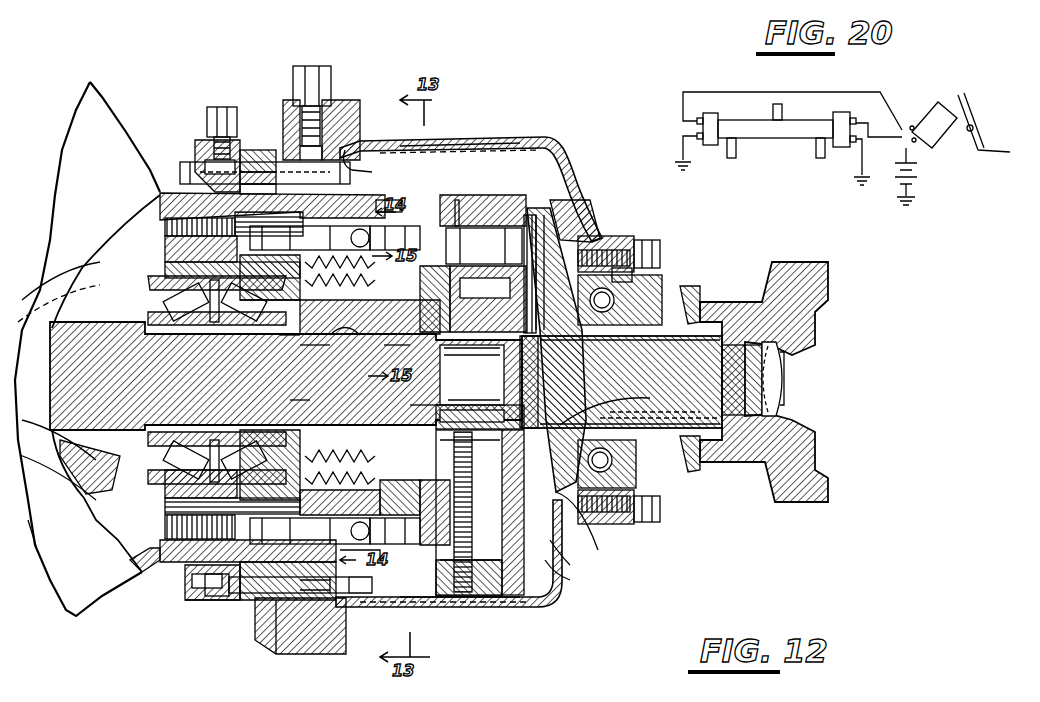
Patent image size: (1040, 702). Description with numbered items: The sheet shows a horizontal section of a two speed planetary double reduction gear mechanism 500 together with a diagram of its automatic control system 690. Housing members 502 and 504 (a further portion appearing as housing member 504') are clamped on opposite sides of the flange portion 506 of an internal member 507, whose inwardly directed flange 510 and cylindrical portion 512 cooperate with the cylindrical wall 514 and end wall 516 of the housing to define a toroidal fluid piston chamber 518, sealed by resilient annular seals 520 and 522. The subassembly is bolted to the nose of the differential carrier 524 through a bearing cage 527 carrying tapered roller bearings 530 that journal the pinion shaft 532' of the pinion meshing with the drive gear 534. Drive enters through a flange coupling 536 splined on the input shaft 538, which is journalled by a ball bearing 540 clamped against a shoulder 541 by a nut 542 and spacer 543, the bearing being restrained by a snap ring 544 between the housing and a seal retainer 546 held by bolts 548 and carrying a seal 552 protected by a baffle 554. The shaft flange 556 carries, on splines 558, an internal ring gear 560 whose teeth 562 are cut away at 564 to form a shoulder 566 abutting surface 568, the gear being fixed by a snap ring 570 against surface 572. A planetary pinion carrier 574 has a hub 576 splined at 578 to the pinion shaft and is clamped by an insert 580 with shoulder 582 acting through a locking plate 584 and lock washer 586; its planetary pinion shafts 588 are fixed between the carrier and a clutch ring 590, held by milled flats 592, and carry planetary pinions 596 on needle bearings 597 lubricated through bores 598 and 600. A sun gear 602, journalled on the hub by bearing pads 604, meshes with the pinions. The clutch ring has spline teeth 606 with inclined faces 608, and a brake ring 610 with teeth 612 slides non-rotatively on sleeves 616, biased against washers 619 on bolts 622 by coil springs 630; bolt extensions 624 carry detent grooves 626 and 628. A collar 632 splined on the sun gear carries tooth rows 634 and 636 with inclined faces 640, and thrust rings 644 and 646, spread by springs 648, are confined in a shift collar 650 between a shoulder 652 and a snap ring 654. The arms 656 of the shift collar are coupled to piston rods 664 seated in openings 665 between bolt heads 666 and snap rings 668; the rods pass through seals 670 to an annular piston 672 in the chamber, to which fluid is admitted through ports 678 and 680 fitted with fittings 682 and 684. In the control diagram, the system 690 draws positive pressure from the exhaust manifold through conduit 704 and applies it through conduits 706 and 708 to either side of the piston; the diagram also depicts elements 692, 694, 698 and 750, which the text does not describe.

In FIG. 12, the two speed planetary double reduction gear mechanism 500 is at (530, 153).
In FIG. 12, the housing member 502 is at (494, 144).
In FIG. 12, the housing member 504 is at (240, 572).
In FIG. 12, the housing member 504' is at (573, 344).
In FIG. 12, the flange portion 506 is at (330, 654).
In FIG. 12, the internal member 507 is at (258, 606).
In FIG. 12, the radially inwardly directed flange 510 is at (265, 173).
In FIG. 12, the cylindrical portion 512 is at (270, 169).
In FIG. 12, the cylindrical wall 514 is at (264, 148).
In FIG. 12, the end wall 516 is at (258, 160).
In FIG. 12, the annular fluid piston chamber 518 is at (284, 654).
In FIG. 12, the resilient annular seal 520 is at (272, 206).
In FIG. 12, the resilient annular seal 522 is at (338, 110).
In FIG. 12, the differential carrier 524 is at (50, 548).
In FIG. 12, the bearing cage 527 is at (165, 496).
In FIG. 12, the tapered roller bearings 530 is at (170, 286).
In FIG. 12, the pinion shaft 532' is at (286, 376).
In FIG. 12, the bevel or hypoid drive gear 534 is at (74, 482).
In FIG. 12, the flange coupling 536 is at (822, 288).
In FIG. 12, the input shaft 538 is at (770, 362).
In FIG. 12, the ball bearing 540 is at (576, 356).
In FIG. 12, the shoulder 541 is at (586, 426).
In FIG. 12, the nut 542 is at (792, 370).
In FIG. 12, the spacer 543 is at (626, 416).
In FIG. 12, the snap ring 544 is at (646, 266).
In FIG. 12, the seal retainer 546 is at (620, 238).
In FIG. 12, the bolts 548 is at (660, 252).
In FIG. 12, the seal 552 is at (660, 508).
In FIG. 12, the baffle 554 is at (700, 466).
In FIG. 12, the radially extending flange 556 is at (548, 524).
In FIG. 12, the splines 558 is at (545, 600).
In FIG. 12, the internal ring gear 560 is at (478, 604).
In FIG. 12, the teeth 562 is at (508, 606).
In FIG. 12, the cut away 564 is at (568, 566).
In FIG. 12, the flat radial shoulder 566 is at (508, 562).
In FIG. 12, the flat surface 568 is at (578, 502).
In FIG. 12, the internal snap ring 570 is at (570, 580).
In FIG. 12, the axially facing surface 572 is at (600, 550).
In FIG. 12, the planetary pinion carrier 574 is at (472, 383).
In FIG. 12, the hub 576 is at (470, 360).
In FIG. 12, the splines 578 is at (294, 356).
In FIG. 12, the internally threaded insert 580 is at (472, 391).
In FIG. 12, the radially extending shoulder 582 is at (540, 420).
In FIG. 12, the planetary pinion shaft locking plate 584 is at (480, 418).
In FIG. 12, the lock washer 586 is at (600, 326).
In FIG. 12, the planetary pinion shafts 588 is at (484, 246).
In FIG. 12, the clutch ring 590 is at (448, 204).
In FIG. 12, the milled flats 592 is at (560, 246).
In FIG. 12, the planetary pinion 596 is at (434, 288).
In FIG. 12, the needle bearings 597 is at (457, 200).
In FIG. 12, the axially extending bore 598 is at (590, 246).
In FIG. 12, the transverse bore 600 is at (483, 204).
In FIG. 12, the sun gear 602 is at (353, 366).
In FIG. 12, the bearing pads 604 is at (284, 308).
In FIG. 12, the internal spline teeth 606 is at (420, 510).
In FIG. 12, the inclined end faces 608 is at (421, 412).
In FIG. 12, the brake ring 610 is at (211, 249).
In FIG. 12, the internal spline type teeth 612 is at (232, 271).
In FIG. 12, the sleeves 616 is at (234, 363).
In FIG. 12, the washers 619 is at (290, 531).
In FIG. 12, the bolts 622 is at (165, 227).
In FIG. 12, the extension portions 624 is at (394, 546).
In FIG. 12, the detent receiving groove 626 is at (404, 542).
In FIG. 12, the detent receiving groove 628 is at (374, 565).
In FIG. 12, the coil springs 630 is at (259, 352).
In FIG. 12, the collar 632 is at (397, 375).
In FIG. 12, the teeth 634 is at (318, 372).
In FIG. 12, the teeth 636 is at (298, 397).
In FIG. 12, the inclined end faces 640 is at (282, 340).
In FIG. 12, the thrust ring 644 is at (370, 334).
In FIG. 12, the thrust ring 646 is at (340, 316).
In FIG. 12, the coil compression springs 648 is at (357, 244).
In FIG. 12, the shift collar 650 is at (397, 497).
In FIG. 12, the integral shoulder 652 is at (310, 472).
In FIG. 12, the snap ring 654 is at (351, 469).
In FIG. 12, the arms 656 is at (384, 198).
In FIG. 12, the piston rods 664 is at (266, 620).
In FIG. 12, the opening 665 is at (388, 186).
In FIG. 12, the bolt head 666 is at (386, 591).
In FIG. 12, the snap ring 668 is at (346, 589).
In FIG. 12, the seal 670 is at (358, 146).
In FIG. 12, the piston 672 is at (222, 610).
In FIG. 12, the fluid port 678 is at (272, 140).
In FIG. 12, the fluid port 680 is at (205, 168).
In FIG. 12, the fluid fitting 682 is at (290, 82).
In FIG. 12, the fluid fitting 684 is at (218, 110).
In FIG. 20, the automatic control system 690 is at (878, 80).
In FIG. 20, the switch 692 is at (940, 106).
In FIG. 20, the pedal 694 is at (966, 122).
In FIG. 20, the solenoid coil 698 is at (752, 128).
In FIG. 20, the conduit 704 is at (772, 104).
In FIG. 20, the conduit 706 is at (728, 150).
In FIG. 20, the conduit 708 is at (816, 152).
In FIG. 20, the solenoid valve 750 is at (703, 129).